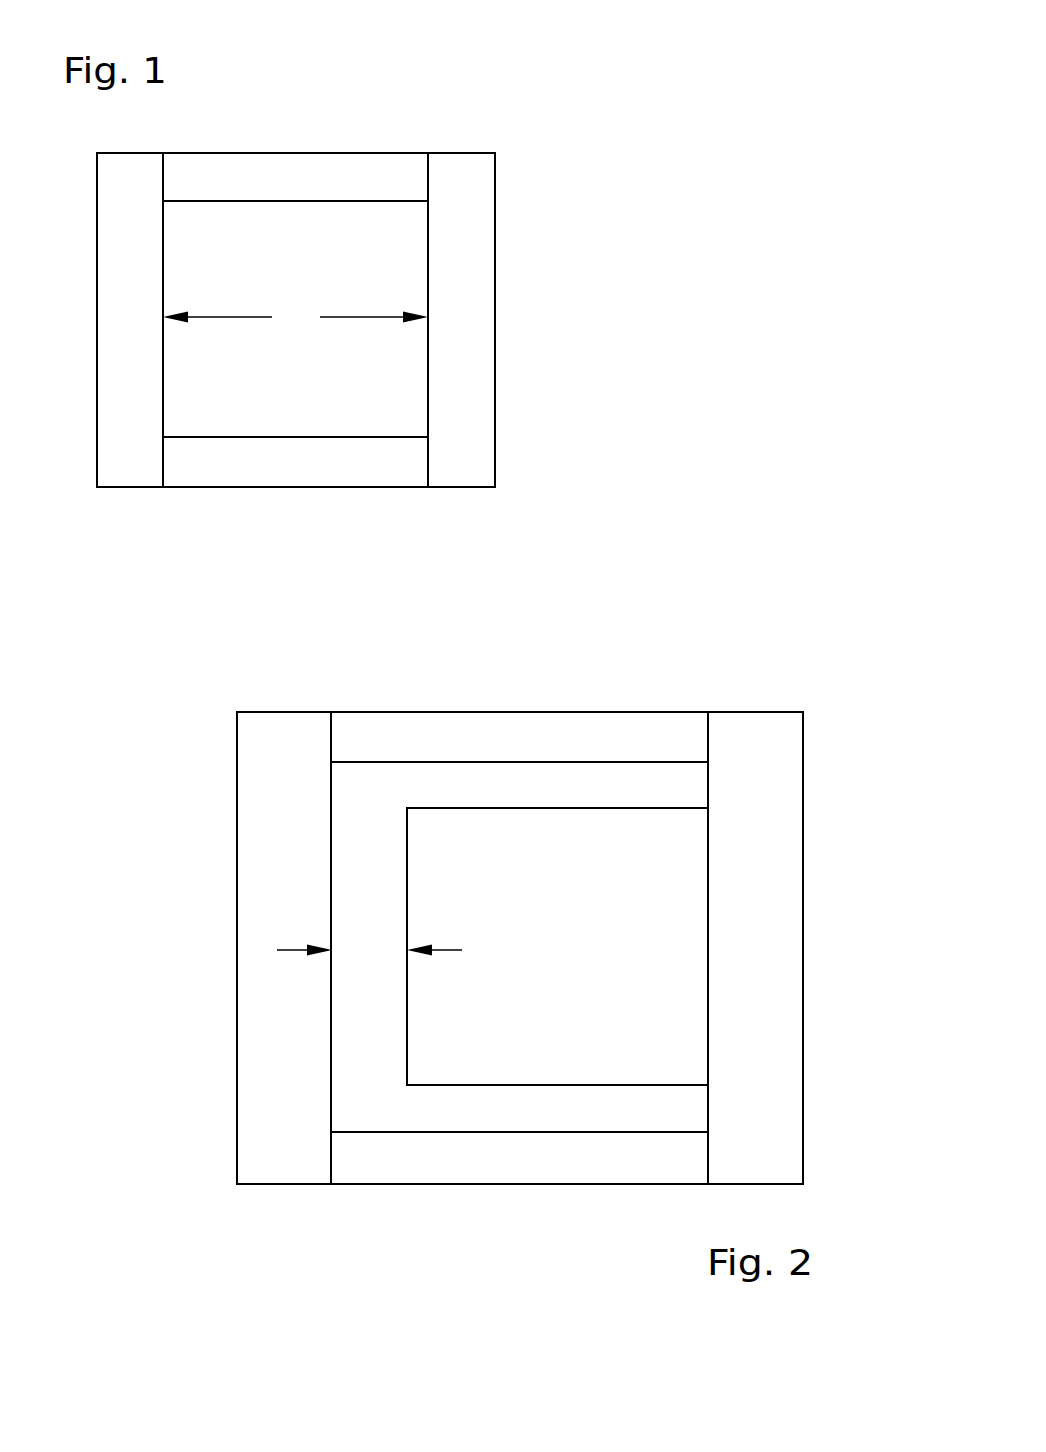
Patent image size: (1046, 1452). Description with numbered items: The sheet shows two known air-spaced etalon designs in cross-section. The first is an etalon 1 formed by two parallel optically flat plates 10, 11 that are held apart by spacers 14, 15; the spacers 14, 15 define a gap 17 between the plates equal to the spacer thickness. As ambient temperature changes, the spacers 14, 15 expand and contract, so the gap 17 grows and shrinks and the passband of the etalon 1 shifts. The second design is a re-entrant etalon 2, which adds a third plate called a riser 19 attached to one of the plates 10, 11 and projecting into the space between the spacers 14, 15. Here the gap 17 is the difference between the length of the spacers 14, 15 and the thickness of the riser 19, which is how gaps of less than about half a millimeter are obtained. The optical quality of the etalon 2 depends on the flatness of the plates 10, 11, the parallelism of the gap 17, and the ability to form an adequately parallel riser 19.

In FIG. 1, the etalon 1 is at (553, 100).
In FIG. 2, the re-entrant etalon 2 is at (749, 616).
In FIG. 1, the etalon plate 10 is at (130, 462).
In FIG. 2, the etalon plate 10 is at (283, 763).
In FIG. 1, the etalon plate 11 is at (463, 452).
In FIG. 2, the etalon plate 11 is at (775, 765).
In FIG. 1, the spacer 14 is at (318, 173).
In FIG. 2, the spacer 14 is at (555, 727).
In FIG. 1, the spacer 15 is at (303, 462).
In FIG. 2, the spacer 15 is at (499, 1165).
In FIG. 1, the gap 17 is at (296, 318).
In FIG. 2, the gap 17 is at (370, 948).
In FIG. 2, the riser 19 is at (582, 957).